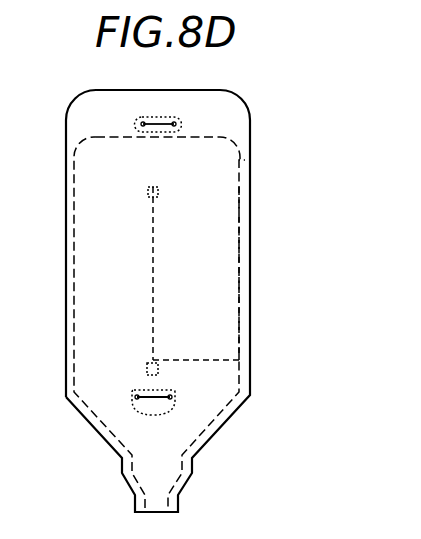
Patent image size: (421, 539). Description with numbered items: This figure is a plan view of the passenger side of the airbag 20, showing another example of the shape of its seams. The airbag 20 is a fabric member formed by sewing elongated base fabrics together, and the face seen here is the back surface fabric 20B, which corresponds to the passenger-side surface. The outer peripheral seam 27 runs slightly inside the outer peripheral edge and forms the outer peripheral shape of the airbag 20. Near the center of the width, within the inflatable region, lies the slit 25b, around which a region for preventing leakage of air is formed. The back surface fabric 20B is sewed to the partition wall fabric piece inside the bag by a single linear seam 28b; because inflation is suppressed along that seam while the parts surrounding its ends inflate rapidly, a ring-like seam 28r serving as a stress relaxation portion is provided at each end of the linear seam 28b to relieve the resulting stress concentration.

The airbag 20 is at (266, 301).
The back surface fabric 20B is at (100, 322).
The outer peripheral seam 27 is at (253, 162).
The linear seam 28b is at (157, 288).
The ring-like seam 28r is at (160, 189).
The slit 25b is at (158, 398).